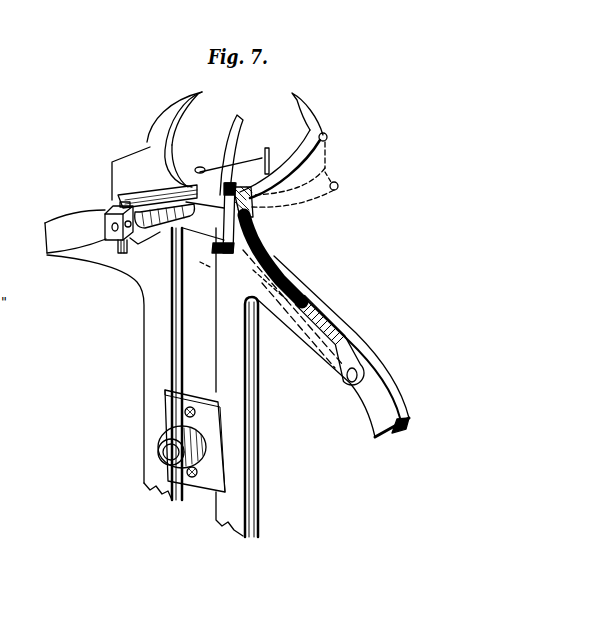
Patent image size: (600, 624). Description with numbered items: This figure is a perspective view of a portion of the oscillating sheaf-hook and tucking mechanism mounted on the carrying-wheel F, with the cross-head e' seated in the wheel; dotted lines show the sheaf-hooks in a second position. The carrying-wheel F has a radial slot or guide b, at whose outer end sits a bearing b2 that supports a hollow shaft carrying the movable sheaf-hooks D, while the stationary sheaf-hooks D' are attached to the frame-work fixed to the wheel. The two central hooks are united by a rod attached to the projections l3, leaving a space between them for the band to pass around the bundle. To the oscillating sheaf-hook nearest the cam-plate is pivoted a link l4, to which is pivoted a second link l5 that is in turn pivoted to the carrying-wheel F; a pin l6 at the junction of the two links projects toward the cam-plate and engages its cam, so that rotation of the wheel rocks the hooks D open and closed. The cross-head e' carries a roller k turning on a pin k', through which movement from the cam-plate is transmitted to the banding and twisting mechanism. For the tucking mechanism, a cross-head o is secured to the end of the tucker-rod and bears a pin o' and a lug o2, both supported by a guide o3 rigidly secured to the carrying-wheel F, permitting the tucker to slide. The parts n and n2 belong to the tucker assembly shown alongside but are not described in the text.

The carrying-wheel F is at (227, 373).
The radial slot or guide b is at (186, 364).
The bearing b2 is at (242, 173).
The roller k is at (191, 441).
The pin k' is at (150, 452).
The cross-head e' is at (200, 443).
The cross-head o is at (109, 223).
The pin o' is at (132, 245).
The lug o2 is at (120, 203).
The guide o3 is at (155, 193).
The roller n is at (162, 220).
The spring n2 is at (158, 238).
The oscillatory sheaf-hook D is at (271, 144).
The stationary sheaf-hook D' is at (174, 137).
The projection l3 is at (327, 134).
The link l4 is at (288, 284).
The link l5 is at (268, 262).
The pin l6 is at (238, 261).